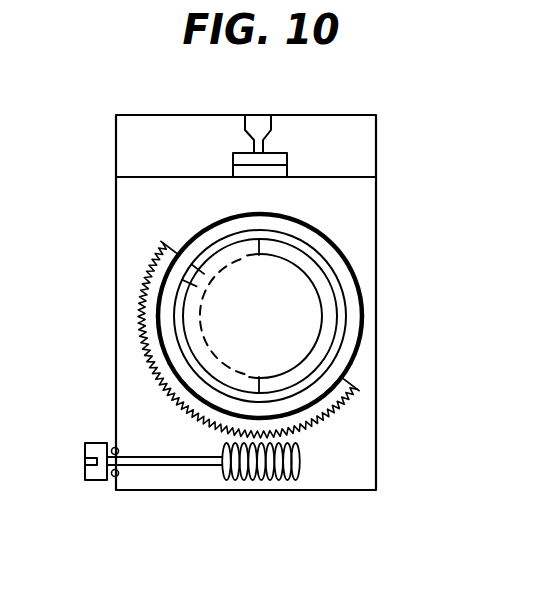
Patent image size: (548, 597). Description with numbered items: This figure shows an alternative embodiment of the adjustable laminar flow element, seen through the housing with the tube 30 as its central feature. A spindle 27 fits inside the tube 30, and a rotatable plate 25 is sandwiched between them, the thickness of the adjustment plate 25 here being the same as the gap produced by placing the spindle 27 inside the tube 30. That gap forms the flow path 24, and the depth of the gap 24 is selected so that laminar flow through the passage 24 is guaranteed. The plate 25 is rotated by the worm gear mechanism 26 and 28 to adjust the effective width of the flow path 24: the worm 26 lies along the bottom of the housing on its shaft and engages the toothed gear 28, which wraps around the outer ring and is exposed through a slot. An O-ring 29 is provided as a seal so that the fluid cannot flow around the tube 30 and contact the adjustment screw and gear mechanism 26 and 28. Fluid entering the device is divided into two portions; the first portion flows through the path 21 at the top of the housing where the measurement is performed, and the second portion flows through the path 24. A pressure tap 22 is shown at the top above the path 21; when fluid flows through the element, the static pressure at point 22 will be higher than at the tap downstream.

The path 21 is at (287, 160).
The pressure tap 22 is at (268, 126).
The flow path 24 is at (318, 279).
The rotatable plate 25 is at (297, 357).
The worm gear mechanism 26 is at (296, 478).
The spindle 27 is at (222, 316).
The gear 28 is at (355, 407).
The O-ring 29 is at (360, 305).
The tube 30 is at (360, 354).